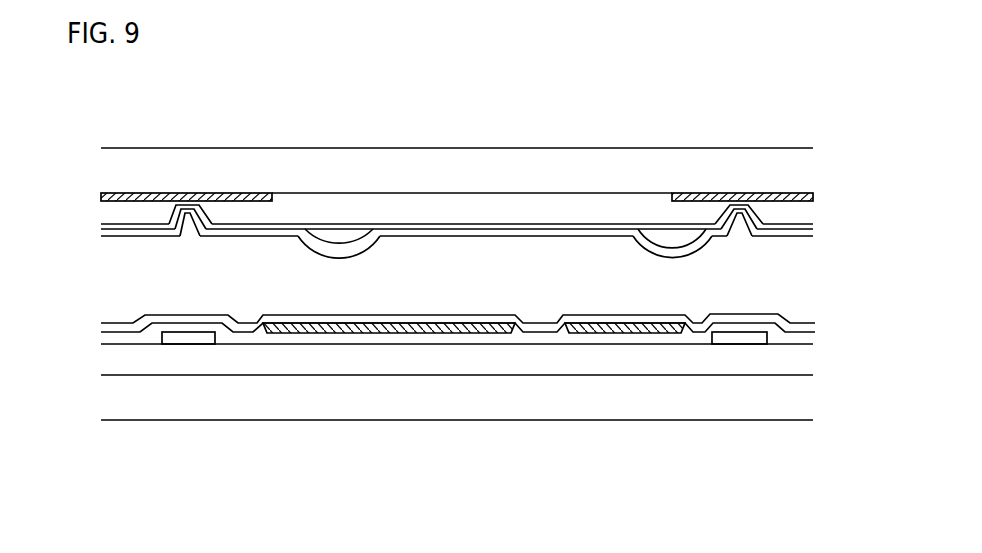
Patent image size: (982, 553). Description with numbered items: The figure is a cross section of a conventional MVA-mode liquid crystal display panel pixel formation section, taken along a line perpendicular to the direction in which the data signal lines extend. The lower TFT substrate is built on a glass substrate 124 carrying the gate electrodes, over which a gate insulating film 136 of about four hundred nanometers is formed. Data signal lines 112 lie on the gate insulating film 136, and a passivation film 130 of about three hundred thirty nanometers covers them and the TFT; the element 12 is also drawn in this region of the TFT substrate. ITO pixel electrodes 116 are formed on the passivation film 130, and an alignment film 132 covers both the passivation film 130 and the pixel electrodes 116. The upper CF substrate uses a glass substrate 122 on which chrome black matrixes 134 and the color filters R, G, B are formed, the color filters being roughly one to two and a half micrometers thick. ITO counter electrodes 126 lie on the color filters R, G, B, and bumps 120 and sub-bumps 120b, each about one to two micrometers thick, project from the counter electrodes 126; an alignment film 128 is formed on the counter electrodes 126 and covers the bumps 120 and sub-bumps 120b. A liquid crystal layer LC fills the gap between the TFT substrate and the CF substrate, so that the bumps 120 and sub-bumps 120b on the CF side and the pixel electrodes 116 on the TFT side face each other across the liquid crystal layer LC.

The glass substrate 122 is at (803, 166).
The black matrix 134 is at (101, 194).
The color filter B is at (432, 210).
The color filter G is at (118, 220).
The color filter R is at (802, 211).
The counter electrode 126 is at (800, 227).
The alignment film 128 is at (802, 237).
The bump 120 is at (333, 238).
The sub-bump 120b is at (656, 237).
The liquid crystal layer LC is at (118, 282).
The alignment film 132 is at (813, 316).
The passivation film 130 is at (805, 336).
The pixel electrode 116 is at (343, 334).
The thin film transistor 12 is at (168, 340).
The data signal line 112 is at (738, 338).
The gate insulating film 136 is at (805, 358).
The glass substrate 124 is at (805, 396).